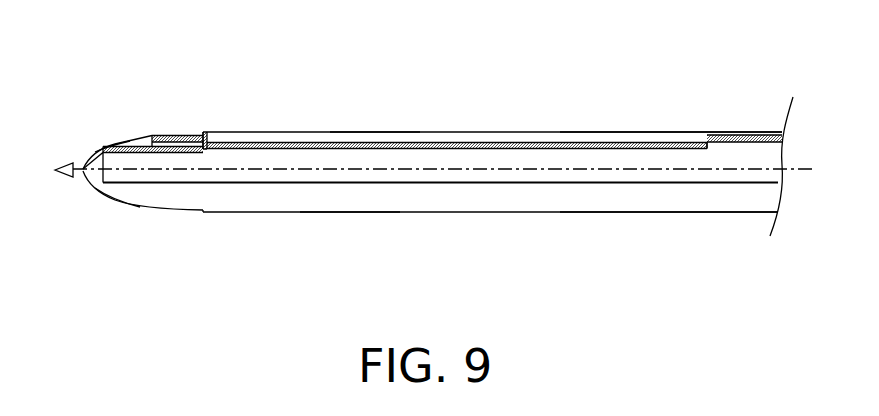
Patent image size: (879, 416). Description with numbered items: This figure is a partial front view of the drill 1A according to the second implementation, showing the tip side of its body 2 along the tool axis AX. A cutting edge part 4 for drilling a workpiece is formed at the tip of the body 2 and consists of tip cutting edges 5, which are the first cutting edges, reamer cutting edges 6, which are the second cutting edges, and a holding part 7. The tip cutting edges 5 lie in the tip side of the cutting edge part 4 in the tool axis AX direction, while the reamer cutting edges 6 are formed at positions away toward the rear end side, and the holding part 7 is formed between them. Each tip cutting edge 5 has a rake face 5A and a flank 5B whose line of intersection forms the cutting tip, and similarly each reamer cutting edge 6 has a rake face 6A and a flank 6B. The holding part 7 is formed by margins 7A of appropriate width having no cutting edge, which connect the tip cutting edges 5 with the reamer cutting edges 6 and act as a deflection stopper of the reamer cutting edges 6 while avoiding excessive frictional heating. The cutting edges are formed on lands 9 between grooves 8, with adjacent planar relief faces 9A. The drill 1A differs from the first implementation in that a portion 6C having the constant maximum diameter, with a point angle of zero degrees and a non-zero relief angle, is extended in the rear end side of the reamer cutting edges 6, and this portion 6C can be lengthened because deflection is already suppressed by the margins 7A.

The drill 1A is at (498, 90).
The body 2 is at (743, 126).
The cutting edge part 4 is at (320, 51).
The tip cutting edge 5 is at (141, 135).
The rake face 5A is at (129, 201).
The flank 5B is at (121, 141).
The reamer cutting edge 6 is at (311, 131).
The rake face 6A is at (338, 199).
The flank 6B is at (282, 130).
The portion having the constant maximum diameter 6C is at (362, 131).
The holding part 7 is at (173, 133).
The margin 7A is at (188, 135).
The groove 8 is at (463, 154).
The land 9 is at (593, 131).
The planar relief face 9A is at (632, 157).
The tool axis AX is at (70, 179).